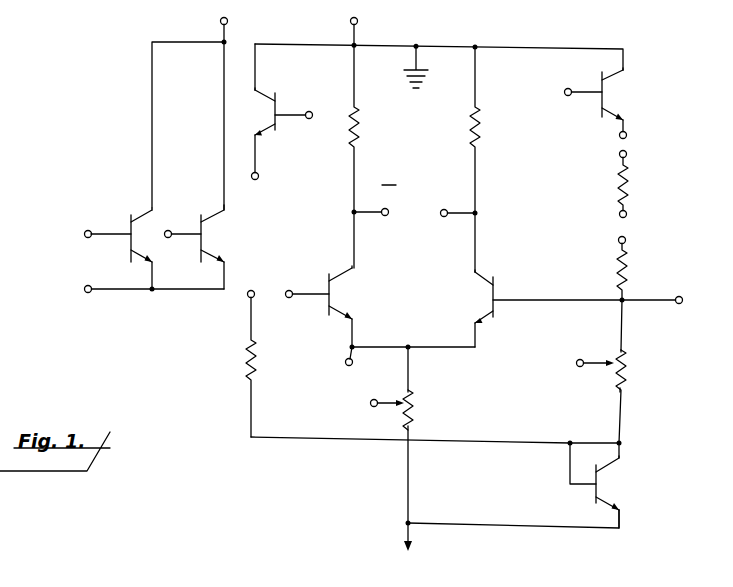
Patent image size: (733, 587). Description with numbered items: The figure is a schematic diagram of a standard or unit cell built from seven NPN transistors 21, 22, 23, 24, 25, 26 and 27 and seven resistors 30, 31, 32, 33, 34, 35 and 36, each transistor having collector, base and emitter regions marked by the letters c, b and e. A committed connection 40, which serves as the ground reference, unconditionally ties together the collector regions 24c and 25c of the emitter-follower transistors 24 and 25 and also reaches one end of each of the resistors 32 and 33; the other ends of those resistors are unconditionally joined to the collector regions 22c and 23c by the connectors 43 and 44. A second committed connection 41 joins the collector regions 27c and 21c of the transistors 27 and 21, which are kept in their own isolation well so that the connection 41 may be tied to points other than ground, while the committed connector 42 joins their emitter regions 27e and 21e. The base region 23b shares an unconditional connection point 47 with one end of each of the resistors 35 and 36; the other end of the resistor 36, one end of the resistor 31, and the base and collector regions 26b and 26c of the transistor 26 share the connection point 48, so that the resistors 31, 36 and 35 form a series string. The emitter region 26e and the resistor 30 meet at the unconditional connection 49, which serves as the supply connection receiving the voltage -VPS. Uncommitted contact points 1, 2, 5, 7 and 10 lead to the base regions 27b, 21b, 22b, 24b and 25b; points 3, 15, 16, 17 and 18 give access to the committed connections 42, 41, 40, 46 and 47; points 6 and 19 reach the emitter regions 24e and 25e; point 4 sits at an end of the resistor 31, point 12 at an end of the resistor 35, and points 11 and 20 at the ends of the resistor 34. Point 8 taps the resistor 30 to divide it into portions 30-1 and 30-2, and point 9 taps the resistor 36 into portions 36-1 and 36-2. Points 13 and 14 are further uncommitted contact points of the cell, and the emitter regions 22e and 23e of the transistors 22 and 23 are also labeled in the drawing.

The uncommitted contact point 1 is at (84, 234).
The uncommitted contact point 2 is at (170, 231).
The uncommitted contact point 3 is at (86, 293).
The uncommitted contact point 4 is at (251, 290).
The uncommitted contact point 5 is at (290, 290).
The uncommitted contact point 6 is at (257, 180).
The uncommitted contact point 7 is at (310, 111).
The uncommitted contact point 8 is at (370, 403).
The uncommitted contact point 9 is at (576, 363).
The uncommitted contact point 10 is at (564, 92).
The uncommitted contact point 11 is at (619, 214).
The uncommitted contact point 12 is at (618, 240).
The uncommitted contact point 13 is at (385, 216).
The uncommitted contact point 14 is at (445, 217).
The uncommitted contact point 15 is at (229, 20).
The uncommitted contact point 16 is at (358, 20).
The uncommitted contact point 17 is at (347, 366).
The uncommitted contact point 18 is at (683, 300).
The uncommitted contact point 19 is at (627, 134).
The uncommitted contact point 20 is at (627, 153).
The NPN transistor 21 is at (232, 243).
The base region 21b is at (200, 246).
The collector region 21c is at (214, 216).
The emitter region 21e is at (216, 260).
The NPN transistor 22 is at (357, 303).
The base region 22b is at (328, 311).
The collector region 22c is at (342, 273).
The emitter region 22e is at (344, 325).
The NPN transistor 23 is at (489, 308).
The base region 23b is at (496, 312).
The collector region 23c is at (485, 278).
The emitter region 23e is at (482, 325).
The NPN transistor 24 is at (263, 128).
The base region 24b is at (280, 119).
The collector region 24c is at (268, 92).
The emitter region 24e is at (263, 135).
The NPN transistor 25 is at (631, 103).
The base region 25b is at (601, 105).
The collector region 25c is at (622, 78).
The emitter region 25e is at (618, 118).
The NPN transistor 26 is at (624, 493).
The base region 26b is at (595, 492).
The collector region 26c is at (606, 470).
The emitter region 26e is at (606, 505).
The NPN transistor 27 is at (160, 243).
The base region 27b is at (128, 246).
The collector region 27c is at (142, 216).
The emitter region 27e is at (143, 258).
The resistor 30 is at (444, 416).
The resistor portion 30-1 is at (406, 392).
The resistor portion 30-2 is at (406, 418).
The resistor 31 is at (257, 372).
The resistor 32 is at (361, 130).
The resistor 33 is at (480, 126).
The resistor 34 is at (630, 185).
The resistor 35 is at (630, 276).
The resistor 36 is at (653, 378).
The resistor portion 36-1 is at (618, 346).
The resistor portion 36-2 is at (617, 384).
The committed connection 40 is at (555, 48).
The committed connection 41 is at (185, 40).
The committed connector 42 is at (182, 291).
The unconditional connector 43 is at (352, 186).
The unconditional connector 44 is at (476, 180).
The committed connection 46 is at (395, 347).
The unconditional connection point 47 is at (623, 320).
The unconditional connection point 48 is at (622, 443).
The unconditional connection 49 is at (412, 520).